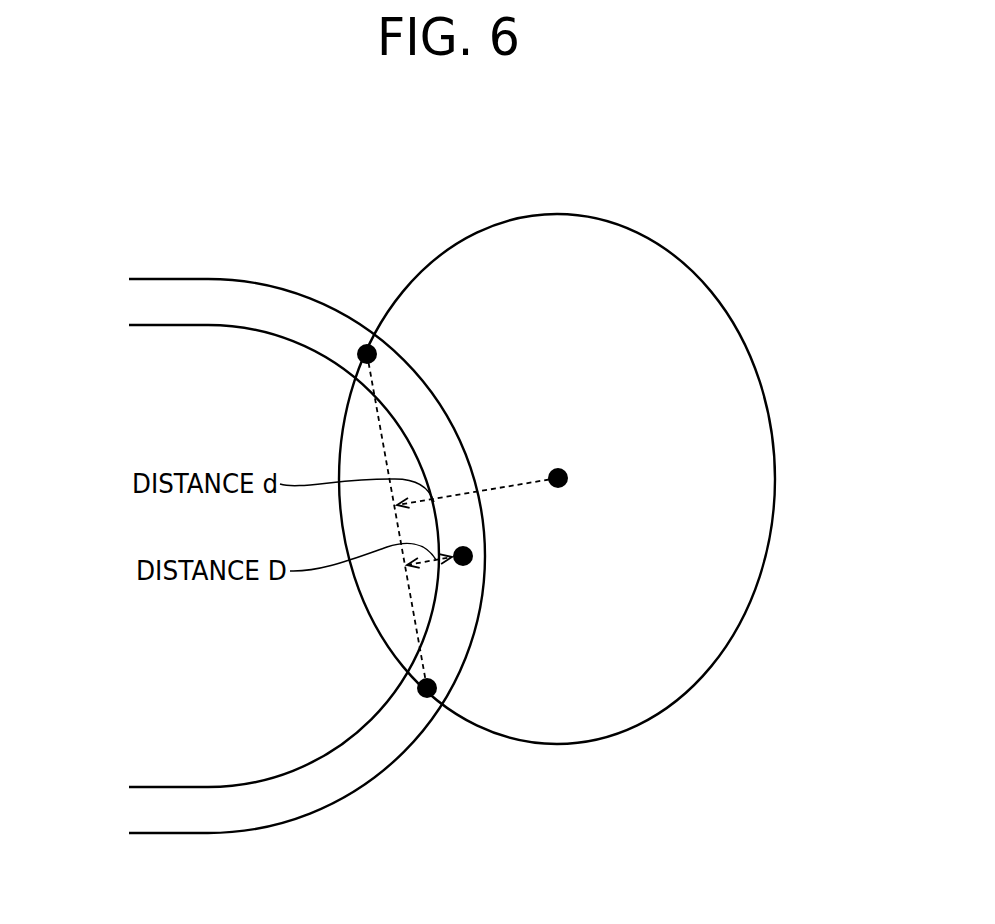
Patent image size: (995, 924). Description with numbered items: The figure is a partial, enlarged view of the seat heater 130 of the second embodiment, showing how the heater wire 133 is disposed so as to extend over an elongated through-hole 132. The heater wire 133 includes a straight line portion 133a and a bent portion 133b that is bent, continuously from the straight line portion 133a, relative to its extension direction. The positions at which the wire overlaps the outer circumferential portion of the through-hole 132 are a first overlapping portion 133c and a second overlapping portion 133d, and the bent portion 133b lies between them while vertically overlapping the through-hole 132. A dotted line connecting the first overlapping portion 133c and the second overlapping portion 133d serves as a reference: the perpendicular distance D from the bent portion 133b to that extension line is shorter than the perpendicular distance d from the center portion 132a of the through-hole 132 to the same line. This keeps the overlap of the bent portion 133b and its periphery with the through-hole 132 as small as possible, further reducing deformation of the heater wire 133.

The seat heater 130 is at (96, 228).
The through-hole 132 is at (745, 480).
The center portion of the through-hole 132a is at (560, 468).
The heater wire 133 is at (193, 298).
The straight line portion 133a is at (196, 822).
The bent portion 133b is at (470, 558).
The first overlapping portion 133c is at (418, 690).
The second overlapping portion 133d is at (358, 356).